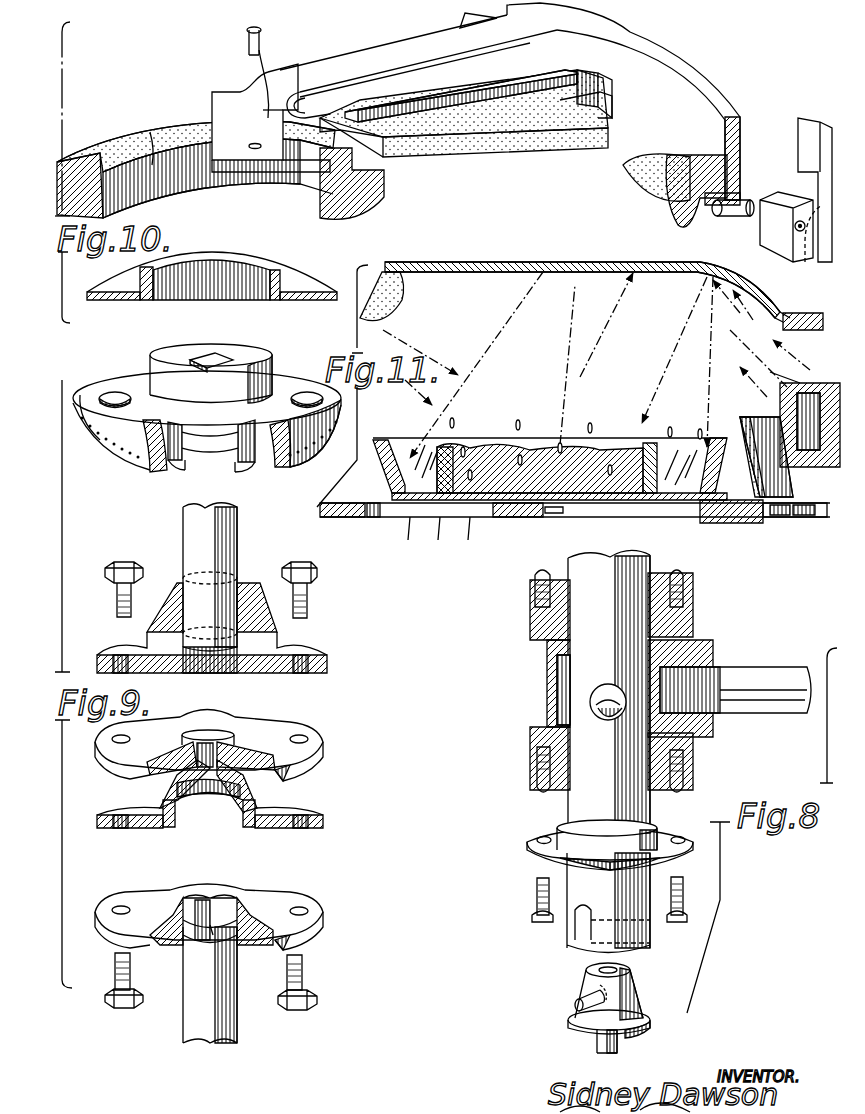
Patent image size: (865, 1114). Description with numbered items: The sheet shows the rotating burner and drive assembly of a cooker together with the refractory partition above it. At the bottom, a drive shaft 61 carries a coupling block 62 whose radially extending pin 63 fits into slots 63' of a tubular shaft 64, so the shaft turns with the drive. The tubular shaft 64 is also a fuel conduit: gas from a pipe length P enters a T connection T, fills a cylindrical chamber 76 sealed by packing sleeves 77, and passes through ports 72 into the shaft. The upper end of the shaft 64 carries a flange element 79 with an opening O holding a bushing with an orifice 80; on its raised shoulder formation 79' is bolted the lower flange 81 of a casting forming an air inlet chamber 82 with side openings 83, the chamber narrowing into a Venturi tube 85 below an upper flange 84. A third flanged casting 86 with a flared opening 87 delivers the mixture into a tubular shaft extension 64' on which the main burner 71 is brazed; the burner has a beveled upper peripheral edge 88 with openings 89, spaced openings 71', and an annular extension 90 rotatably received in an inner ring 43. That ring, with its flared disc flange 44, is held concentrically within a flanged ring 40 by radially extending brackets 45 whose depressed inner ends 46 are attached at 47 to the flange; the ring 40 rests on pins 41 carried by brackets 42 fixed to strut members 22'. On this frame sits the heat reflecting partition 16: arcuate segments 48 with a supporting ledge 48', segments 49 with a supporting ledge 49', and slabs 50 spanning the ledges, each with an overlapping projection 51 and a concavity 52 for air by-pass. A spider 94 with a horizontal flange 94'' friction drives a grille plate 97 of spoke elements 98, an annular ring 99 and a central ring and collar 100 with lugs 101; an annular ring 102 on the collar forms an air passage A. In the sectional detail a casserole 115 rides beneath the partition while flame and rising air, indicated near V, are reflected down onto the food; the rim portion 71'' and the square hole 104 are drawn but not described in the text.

In FIG. 11, the heat reflecting partition 16 is at (548, 276).
In FIG. 10, the strut member 22' is at (798, 190).
In FIG. 10, the flanged ring 40 is at (660, 92).
In FIG. 10, the radially extending pin 41 is at (728, 215).
In FIG. 10, the bracket 42 is at (790, 242).
In FIG. 10, the inner ring 43 is at (228, 255).
In FIG. 10, the flared disc flange 44 is at (286, 300).
In FIG. 11, the flared disc flange 44 is at (822, 316).
In FIG. 10, the radially extending bracket 45 is at (399, 56).
In FIG. 10, the depressed inner end 46 is at (243, 150).
In FIG. 10, the attachment point 47 is at (258, 146).
In FIG. 10, the arcuate segment 48 is at (196, 171).
In FIG. 11, the arcuate segment 48 is at (771, 308).
In FIG. 10, the supporting ledge 48' is at (372, 183).
In FIG. 10, the segment 49 is at (676, 191).
In FIG. 11, the segment 49 is at (399, 296).
In FIG. 10, the supporting ledge 49' is at (644, 177).
In FIG. 10, the slab 50 is at (464, 113).
In FIG. 11, the slab 50 is at (505, 272).
In FIG. 10, the overlapping projection 51 is at (418, 82).
In FIG. 10, the concavity 52 is at (612, 114).
In FIG. 11, the concavity 52 is at (416, 272).
In FIG. 8, the drive shaft 61 is at (598, 1044).
In FIG. 8, the coupling block 62 is at (636, 996).
In FIG. 8, the radially extending pin 63 is at (568, 993).
In FIG. 8, the slot 63' is at (610, 888).
In FIG. 9, the tubular shaft 64 is at (191, 989).
In FIG. 8, the tubular shaft 64 is at (574, 751).
In FIG. 9, the tubular shaft extension 64' is at (191, 575).
In FIG. 9, the main burner 71 is at (207, 407).
In FIG. 11, the main burner 71 is at (810, 425).
In FIG. 9, the spaced openings 71' is at (211, 423).
In FIG. 11, the disc rim 71'' is at (838, 363).
In FIG. 8, the port 72 is at (578, 712).
In FIG. 8, the cylindrical chamber 76 is at (548, 690).
In FIG. 8, the packing sleeve 77 is at (695, 618).
In FIG. 9, the flange element 79 is at (230, 917).
In FIG. 9, the raised shoulder formation 79' is at (159, 887).
In FIG. 9, the orifice 80 is at (214, 896).
In FIG. 9, the lower flange 81 is at (325, 822).
In FIG. 9, the air inlet chamber 82 is at (165, 790).
In FIG. 9, the opening 83 is at (205, 808).
In FIG. 9, the upper flange 84 is at (323, 745).
In FIG. 9, the Venturi tube 85 is at (213, 740).
In FIG. 9, the third flanged casting 86 is at (327, 663).
In FIG. 9, the flared opening 87 is at (213, 660).
In FIG. 9, the beveled upper peripheral edge 88 is at (95, 400).
In FIG. 11, the beveled upper peripheral edge 88 is at (755, 372).
In FIG. 9, the opening 89 is at (120, 434).
In FIG. 11, the opening 89 is at (792, 386).
In FIG. 9, the annular extension 90 is at (252, 358).
In FIG. 11, the spider 94 is at (817, 537).
In FIG. 11, the horizontal flange 94'' is at (784, 555).
In FIG. 11, the grille plate 97 is at (415, 518).
In FIG. 11, the spoke element 98 is at (505, 530).
In FIG. 11, the annular ring 99 is at (336, 503).
In FIG. 11, the central ring and collar 100 is at (770, 525).
In FIG. 11, the lug 101 is at (792, 520).
In FIG. 11, the annular ring 102 is at (705, 470).
In FIG. 9, the square hole 104 is at (205, 356).
In FIG. 11, the casserole 115 is at (470, 440).
In FIG. 11, the air passage A is at (790, 525).
In FIG. 9, the opening O is at (208, 938).
In FIG. 8, the pipe length P is at (780, 675).
In FIG. 8, the T connection T is at (548, 665).
In FIG. 11, the vapour V is at (400, 270).